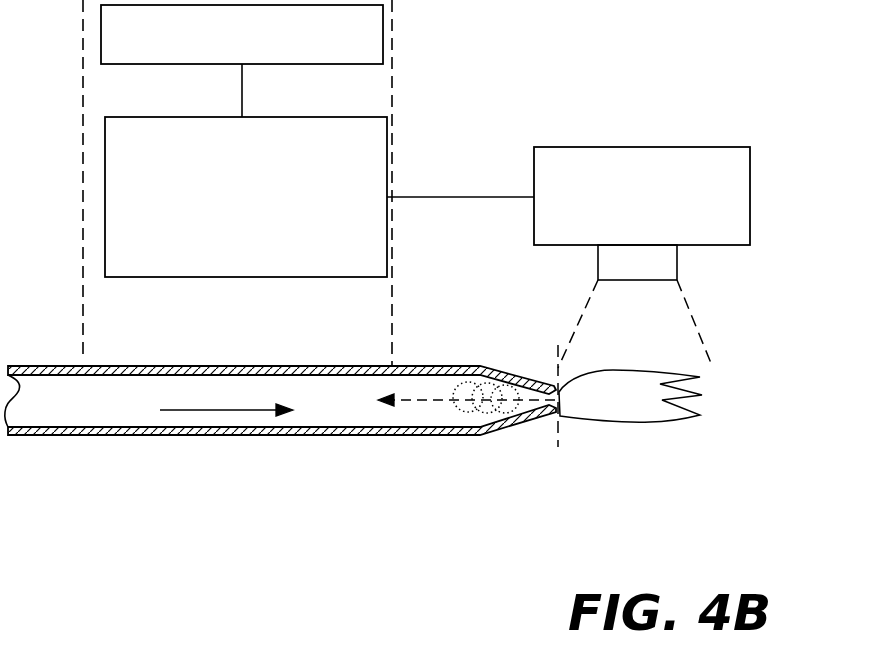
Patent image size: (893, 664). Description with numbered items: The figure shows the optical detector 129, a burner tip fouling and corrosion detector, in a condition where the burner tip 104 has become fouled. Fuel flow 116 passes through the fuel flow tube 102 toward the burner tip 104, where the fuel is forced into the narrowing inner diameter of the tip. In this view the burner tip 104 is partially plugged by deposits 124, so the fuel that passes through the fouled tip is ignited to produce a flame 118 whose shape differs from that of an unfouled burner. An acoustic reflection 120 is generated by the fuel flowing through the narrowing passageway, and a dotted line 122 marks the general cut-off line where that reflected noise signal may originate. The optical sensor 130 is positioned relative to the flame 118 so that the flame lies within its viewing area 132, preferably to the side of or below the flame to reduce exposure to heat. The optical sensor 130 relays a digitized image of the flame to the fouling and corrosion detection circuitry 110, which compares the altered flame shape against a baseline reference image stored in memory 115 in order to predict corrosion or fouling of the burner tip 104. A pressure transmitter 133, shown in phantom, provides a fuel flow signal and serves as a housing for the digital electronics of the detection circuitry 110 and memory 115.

The fuel flow tube 102 is at (298, 437).
The burner tip 104 is at (541, 379).
The fouling and corrosion detection circuitry 110 is at (105, 197).
The memory 115 is at (101, 38).
The fuel flow 116 is at (171, 412).
The flame 118 is at (650, 422).
The acoustic reflection 120 is at (452, 412).
The dotted line 122 is at (558, 447).
The deposits 124 is at (533, 432).
The optical detector 129 is at (530, 101).
The optical sensor 130 is at (642, 147).
The viewing area 132 is at (697, 312).
The pressure transmitter 133 is at (80, 258).